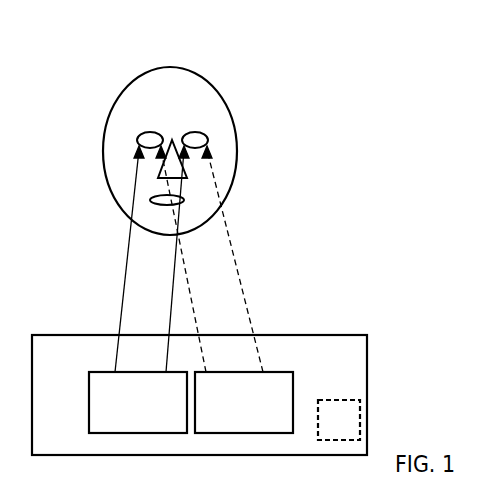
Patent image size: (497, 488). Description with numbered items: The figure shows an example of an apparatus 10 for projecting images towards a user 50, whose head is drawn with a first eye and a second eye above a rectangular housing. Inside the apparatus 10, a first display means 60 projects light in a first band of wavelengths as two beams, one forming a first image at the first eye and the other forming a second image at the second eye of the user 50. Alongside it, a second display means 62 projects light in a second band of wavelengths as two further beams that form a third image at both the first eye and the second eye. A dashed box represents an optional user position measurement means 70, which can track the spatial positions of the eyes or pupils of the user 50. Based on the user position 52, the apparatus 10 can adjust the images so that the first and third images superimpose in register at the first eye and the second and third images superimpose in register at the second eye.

The apparatus 10 is at (367, 335).
The user 50 is at (168, 67).
The user position 52 is at (260, 207).
The first display means 60 is at (117, 417).
The second display means 62 is at (265, 422).
The user position measurement means 70 is at (348, 418).